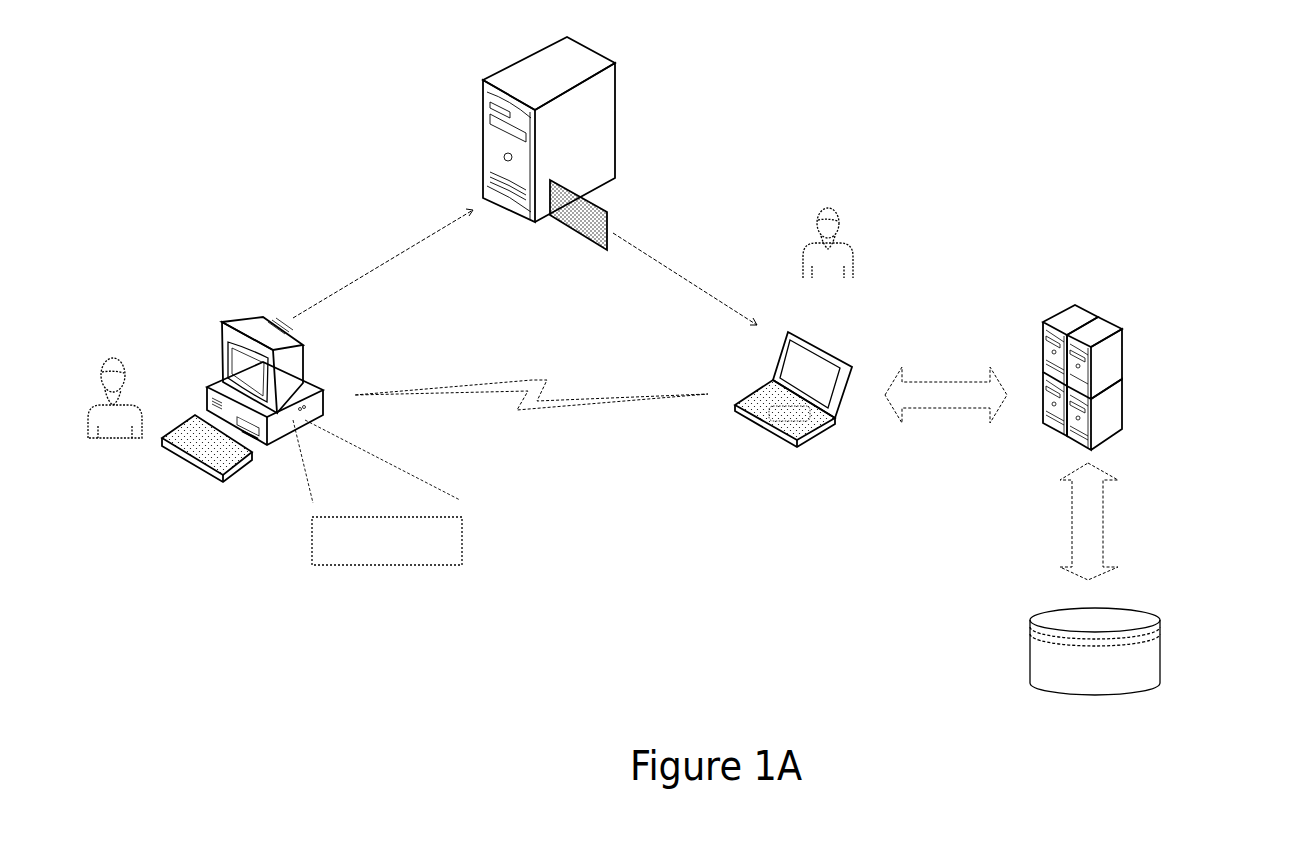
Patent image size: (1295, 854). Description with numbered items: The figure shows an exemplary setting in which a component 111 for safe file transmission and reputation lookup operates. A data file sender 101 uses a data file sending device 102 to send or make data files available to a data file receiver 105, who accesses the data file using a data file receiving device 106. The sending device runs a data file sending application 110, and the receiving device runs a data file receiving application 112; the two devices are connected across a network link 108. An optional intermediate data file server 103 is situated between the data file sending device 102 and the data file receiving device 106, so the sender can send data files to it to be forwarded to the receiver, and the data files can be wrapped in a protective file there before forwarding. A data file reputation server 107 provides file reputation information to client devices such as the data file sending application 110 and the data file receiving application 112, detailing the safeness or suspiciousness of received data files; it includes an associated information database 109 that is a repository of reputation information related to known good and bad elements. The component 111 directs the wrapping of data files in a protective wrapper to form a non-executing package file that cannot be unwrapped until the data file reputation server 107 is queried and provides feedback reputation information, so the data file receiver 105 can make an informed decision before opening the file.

The data file sender 101 is at (113, 387).
The data file sending device 102 is at (302, 367).
The intermediate data file server 103 is at (577, 58).
The data file receiver 105 is at (826, 235).
The data file receiving device 106 is at (815, 343).
The data file reputation server 107 is at (1080, 305).
The network link 108 is at (531, 380).
The information database 109 is at (1138, 613).
The data file sending application 110 is at (369, 454).
The component for safe file transmission and reputation lookup 111 is at (462, 540).
The data file receiving application 112 is at (789, 413).